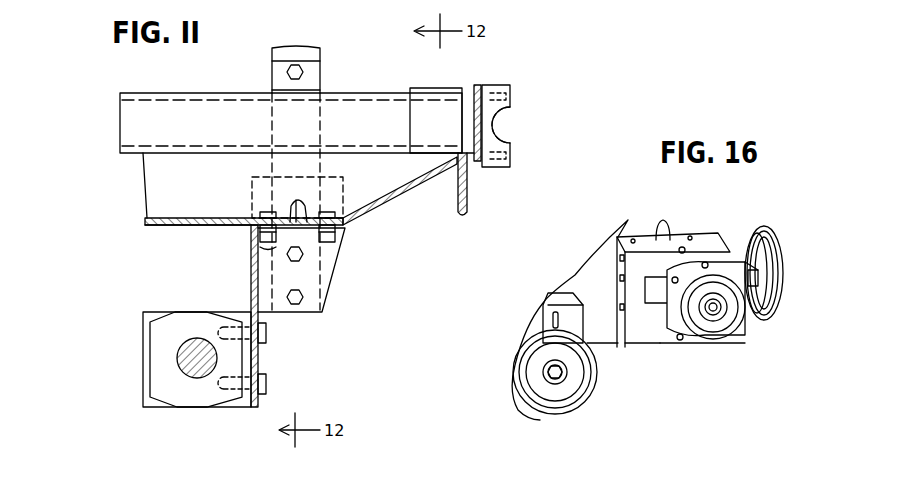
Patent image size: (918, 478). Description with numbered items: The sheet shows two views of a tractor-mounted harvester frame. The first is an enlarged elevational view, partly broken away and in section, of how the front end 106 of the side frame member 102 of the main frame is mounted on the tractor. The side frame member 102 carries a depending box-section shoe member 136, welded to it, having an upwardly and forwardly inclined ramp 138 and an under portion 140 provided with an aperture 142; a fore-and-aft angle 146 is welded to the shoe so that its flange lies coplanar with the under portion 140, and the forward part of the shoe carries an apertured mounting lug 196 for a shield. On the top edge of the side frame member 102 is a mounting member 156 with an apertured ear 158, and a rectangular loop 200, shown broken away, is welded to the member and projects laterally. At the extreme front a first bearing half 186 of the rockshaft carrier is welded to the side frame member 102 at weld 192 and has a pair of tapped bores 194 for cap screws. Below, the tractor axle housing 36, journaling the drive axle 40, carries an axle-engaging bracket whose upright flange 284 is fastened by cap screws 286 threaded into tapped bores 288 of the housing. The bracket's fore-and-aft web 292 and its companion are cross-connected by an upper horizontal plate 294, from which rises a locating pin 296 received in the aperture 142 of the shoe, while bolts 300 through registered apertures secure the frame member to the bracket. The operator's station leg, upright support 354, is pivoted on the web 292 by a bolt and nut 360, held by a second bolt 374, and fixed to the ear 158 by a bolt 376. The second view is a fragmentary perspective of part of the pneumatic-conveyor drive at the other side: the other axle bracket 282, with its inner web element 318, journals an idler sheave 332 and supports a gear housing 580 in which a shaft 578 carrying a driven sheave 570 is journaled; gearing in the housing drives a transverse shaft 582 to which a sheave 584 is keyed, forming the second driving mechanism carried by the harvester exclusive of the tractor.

In FIG. 11, the side frame member 102 is at (130, 112).
In FIG. 11, the front end 106 is at (197, 107).
In FIG. 11, the rectangular loop 200 is at (413, 90).
In FIG. 11, the upright support 354 is at (320, 50).
In FIG. 11, the apertured ear 158 is at (280, 67).
In FIG. 11, the mounting member 156 is at (278, 90).
In FIG. 11, the bolt 376 is at (303, 72).
In FIG. 11, the weld 192 is at (477, 117).
In FIG. 11, the first bearing half 186 is at (500, 168).
In FIG. 11, the tapped bores 194 is at (507, 143).
In FIG. 11, the apertured mounting lug 196 is at (463, 217).
In FIG. 11, the ramp 138 is at (417, 200).
In FIG. 11, the shoe member 136 is at (157, 212).
In FIG. 11, the under portion 140 is at (190, 227).
In FIG. 11, the angle 146 is at (253, 175).
In FIG. 11, the upright flange 284 is at (255, 293).
In FIG. 11, the upright web 292 is at (338, 257).
In FIG. 11, the second bolt 374 is at (303, 257).
In FIG. 11, the bolt and nut 360 is at (303, 295).
In FIG. 11, the bolts 300 is at (257, 243).
In FIG. 11, the upper horizontal plate 294 is at (257, 250).
In FIG. 11, the aperture 142 is at (290, 215).
In FIG. 11, the locating pin 296 is at (303, 203).
In FIG. 11, the axle housing 36 is at (148, 400).
In FIG. 11, the drive axle 40 is at (180, 352).
In FIG. 11, the tapped bores 288 is at (240, 383).
In FIG. 11, the cap screws 286 is at (267, 383).
In FIG. 16, the inner web element 318 is at (617, 343).
In FIG. 16, the idler sheave 332 is at (570, 407).
In FIG. 16, the axle bracket 282 is at (713, 232).
In FIG. 16, the gear housing 580 is at (655, 280).
In FIG. 16, the driven sheave 570 is at (733, 337).
In FIG. 16, the shaft 578 is at (715, 312).
In FIG. 16, the sheave 584 is at (780, 303).
In FIG. 16, the transverse shaft 582 is at (753, 270).